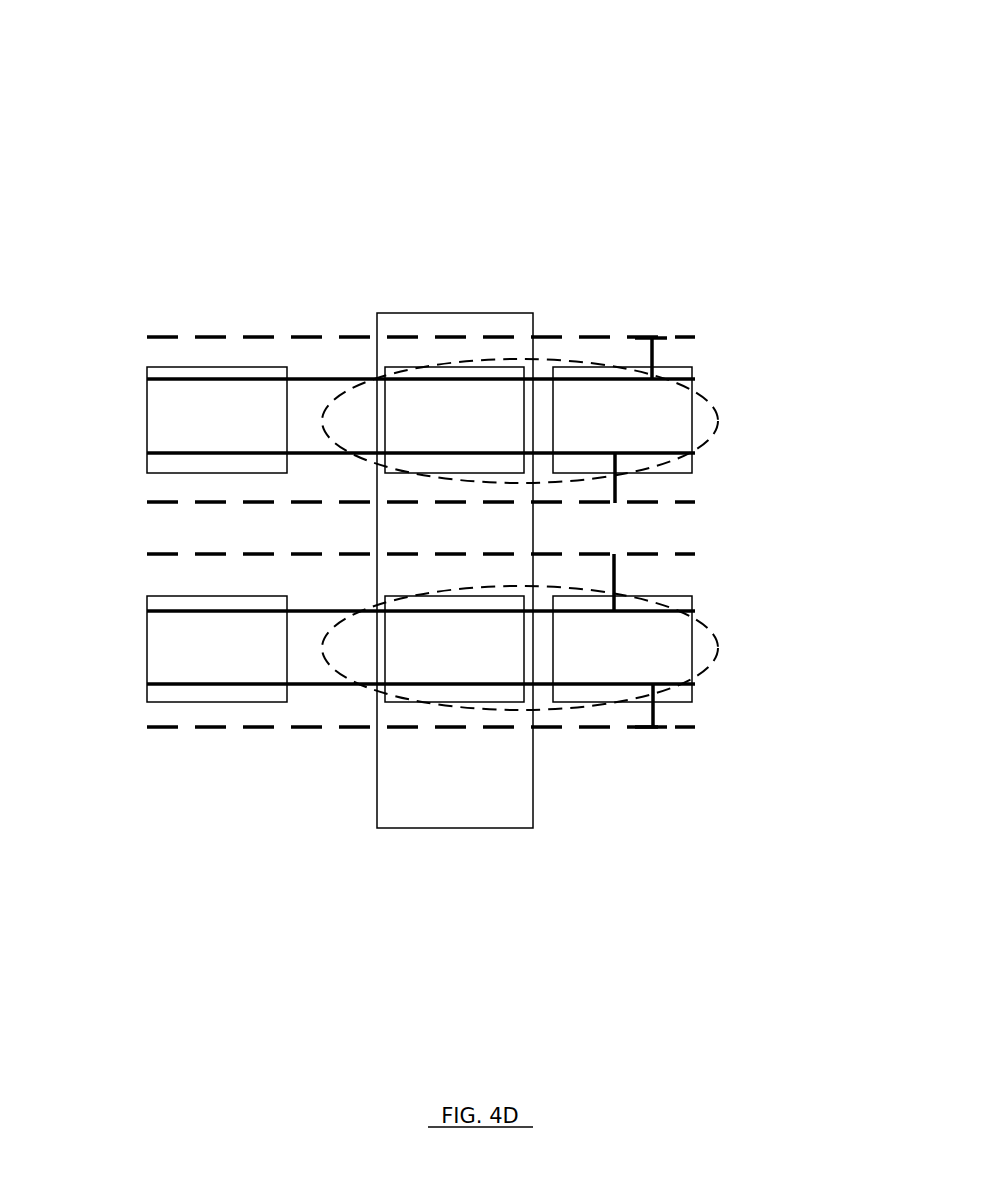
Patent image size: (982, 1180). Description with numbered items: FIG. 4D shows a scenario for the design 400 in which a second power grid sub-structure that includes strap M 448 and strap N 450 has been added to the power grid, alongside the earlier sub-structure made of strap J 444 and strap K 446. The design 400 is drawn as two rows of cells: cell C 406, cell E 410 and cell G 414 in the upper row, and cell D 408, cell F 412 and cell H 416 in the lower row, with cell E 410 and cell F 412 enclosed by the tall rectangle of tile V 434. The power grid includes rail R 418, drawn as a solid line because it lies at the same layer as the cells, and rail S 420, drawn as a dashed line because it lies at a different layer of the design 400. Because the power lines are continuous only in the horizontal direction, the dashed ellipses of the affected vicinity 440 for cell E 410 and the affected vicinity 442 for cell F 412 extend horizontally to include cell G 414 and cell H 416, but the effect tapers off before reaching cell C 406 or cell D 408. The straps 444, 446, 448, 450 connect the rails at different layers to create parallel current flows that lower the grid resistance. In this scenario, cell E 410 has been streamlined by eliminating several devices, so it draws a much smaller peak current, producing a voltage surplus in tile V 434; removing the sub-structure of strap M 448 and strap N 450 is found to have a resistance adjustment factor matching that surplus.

The design 400 is at (148, 163).
The cell C 406 is at (198, 444).
The cell D 408 is at (198, 673).
The cell E 410 is at (436, 444).
The cell F 412 is at (436, 673).
The cell G 414 is at (603, 444).
The cell H 416 is at (603, 673).
The rail R 418 is at (188, 379).
The rail S 420 is at (311, 337).
The tile V 434 is at (436, 806).
The affected vicinity for cell E 440 is at (582, 361).
The affected vicinity for cell F 442 is at (585, 706).
The strap J 444 is at (615, 488).
The strap K 446 is at (614, 583).
The strap M 448 is at (652, 353).
The strap N 450 is at (653, 713).